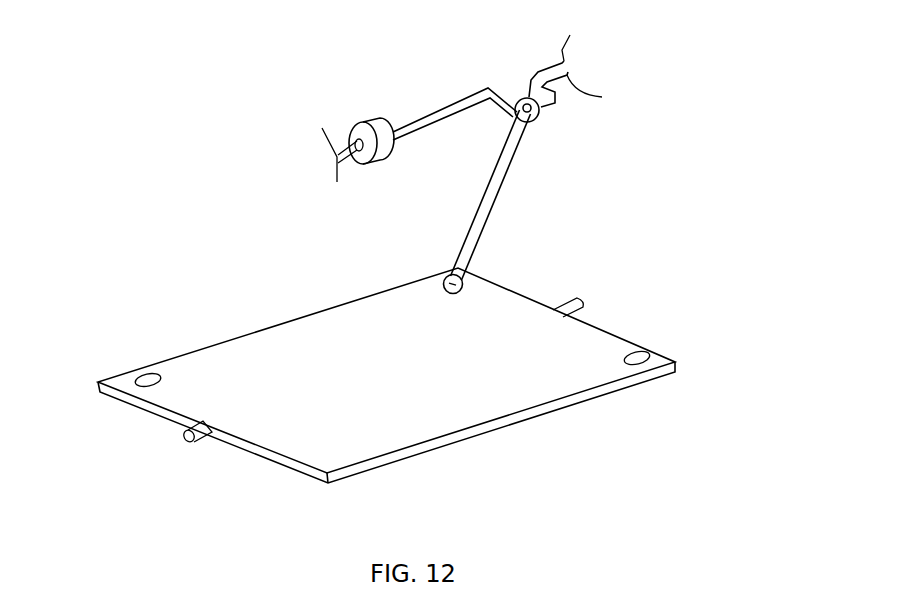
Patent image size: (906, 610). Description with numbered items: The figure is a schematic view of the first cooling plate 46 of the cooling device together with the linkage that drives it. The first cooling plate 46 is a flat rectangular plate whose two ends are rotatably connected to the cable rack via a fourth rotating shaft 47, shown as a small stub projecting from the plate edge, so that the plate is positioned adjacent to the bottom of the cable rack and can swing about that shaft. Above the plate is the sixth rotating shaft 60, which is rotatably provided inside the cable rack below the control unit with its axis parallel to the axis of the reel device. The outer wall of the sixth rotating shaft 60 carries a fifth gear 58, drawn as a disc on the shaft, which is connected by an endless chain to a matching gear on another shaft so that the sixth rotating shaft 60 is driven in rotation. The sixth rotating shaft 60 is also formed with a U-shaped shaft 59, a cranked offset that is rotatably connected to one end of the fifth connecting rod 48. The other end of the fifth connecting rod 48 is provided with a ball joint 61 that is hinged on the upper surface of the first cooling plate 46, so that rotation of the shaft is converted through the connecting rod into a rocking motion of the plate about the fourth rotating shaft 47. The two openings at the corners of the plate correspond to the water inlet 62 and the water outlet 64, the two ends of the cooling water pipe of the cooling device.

The first cooling plate 46 is at (232, 367).
The fourth rotating shaft 47 is at (188, 439).
The fifth connecting rod 48 is at (497, 205).
The fifth gear 58 is at (367, 125).
The U-shaped shaft 59 is at (513, 115).
The sixth rotating shaft 60 is at (438, 120).
The ball joint 61 is at (444, 278).
The water inlet 62 is at (147, 380).
The water outlet 64 is at (660, 353).